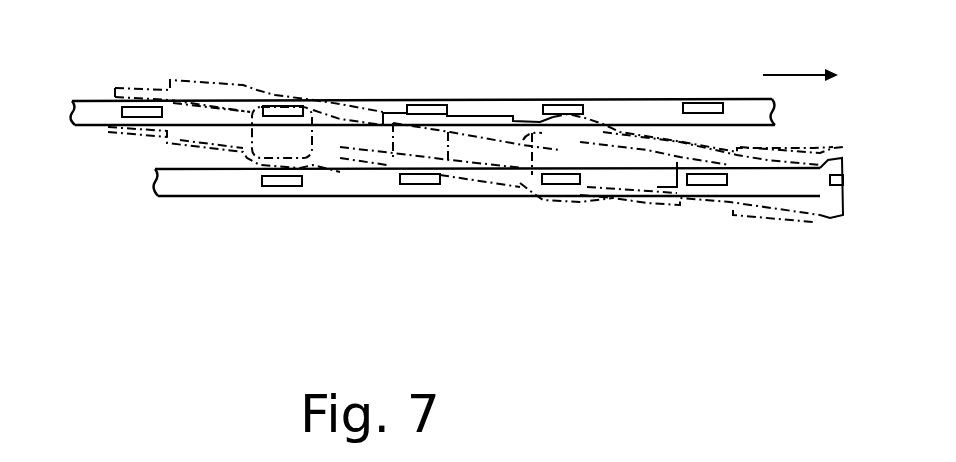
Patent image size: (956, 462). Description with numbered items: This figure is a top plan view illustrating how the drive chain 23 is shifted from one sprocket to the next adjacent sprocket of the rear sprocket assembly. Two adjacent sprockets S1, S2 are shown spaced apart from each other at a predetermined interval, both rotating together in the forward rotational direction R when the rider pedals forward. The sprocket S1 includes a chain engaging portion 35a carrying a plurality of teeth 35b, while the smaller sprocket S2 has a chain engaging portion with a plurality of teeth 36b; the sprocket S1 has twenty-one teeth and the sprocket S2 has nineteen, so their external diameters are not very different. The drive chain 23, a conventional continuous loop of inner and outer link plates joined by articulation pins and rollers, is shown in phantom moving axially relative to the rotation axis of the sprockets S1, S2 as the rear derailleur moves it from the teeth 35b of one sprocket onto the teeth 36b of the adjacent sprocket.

The sprocket S1 is at (80, 101).
The sprocket S2 is at (180, 197).
The chain engaging portion 35a is at (367, 106).
The teeth 35b is at (285, 105).
The teeth 36b is at (562, 185).
The drive chain 23 is at (485, 197).
The forward rotational direction R is at (800, 53).